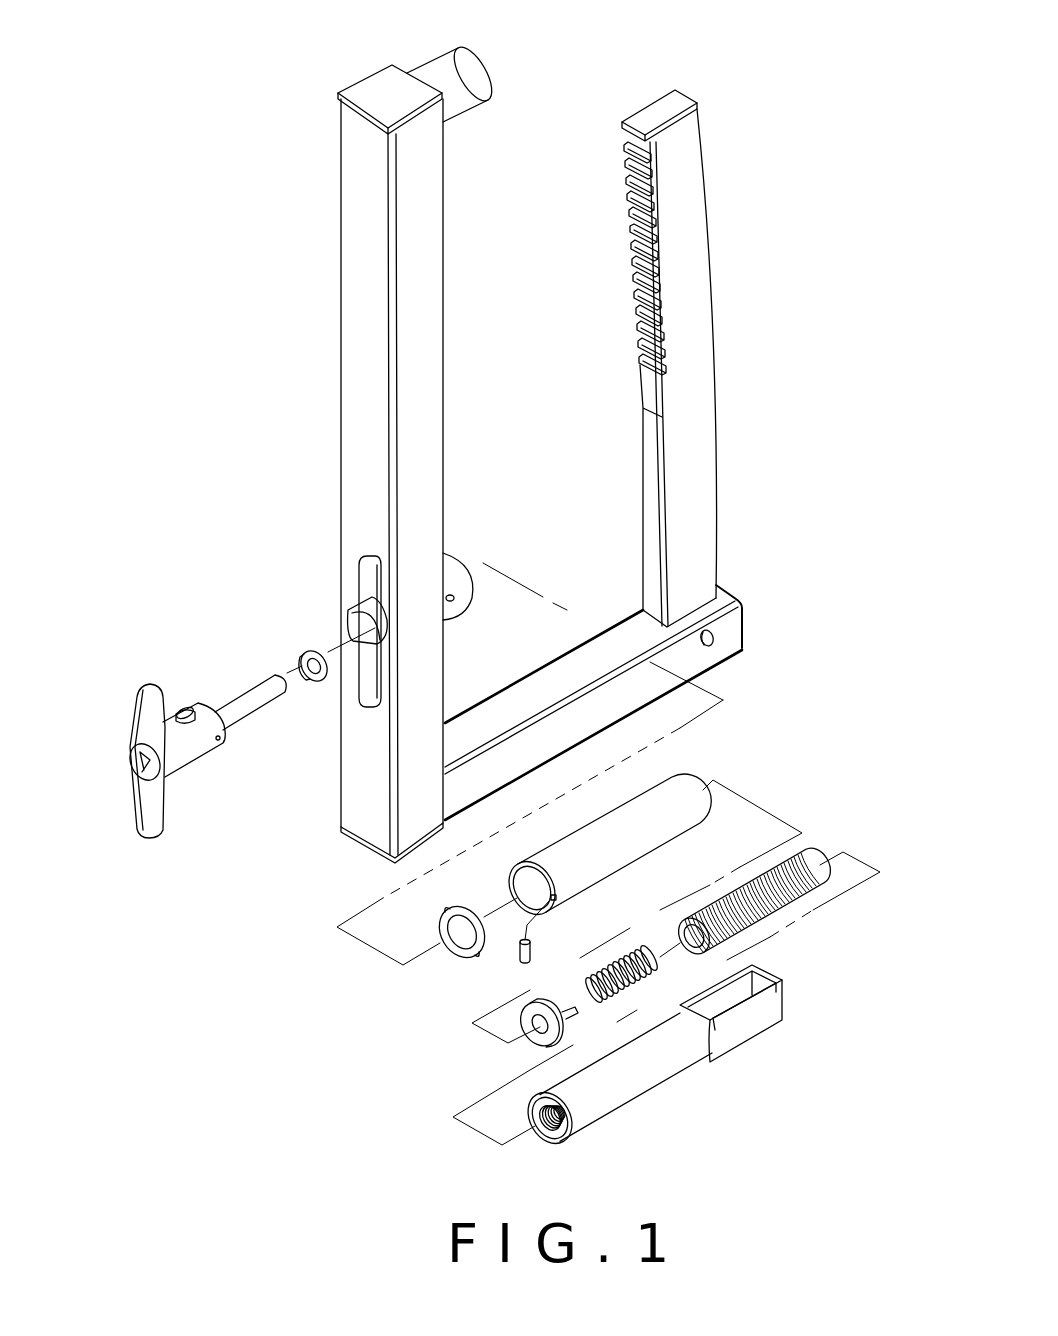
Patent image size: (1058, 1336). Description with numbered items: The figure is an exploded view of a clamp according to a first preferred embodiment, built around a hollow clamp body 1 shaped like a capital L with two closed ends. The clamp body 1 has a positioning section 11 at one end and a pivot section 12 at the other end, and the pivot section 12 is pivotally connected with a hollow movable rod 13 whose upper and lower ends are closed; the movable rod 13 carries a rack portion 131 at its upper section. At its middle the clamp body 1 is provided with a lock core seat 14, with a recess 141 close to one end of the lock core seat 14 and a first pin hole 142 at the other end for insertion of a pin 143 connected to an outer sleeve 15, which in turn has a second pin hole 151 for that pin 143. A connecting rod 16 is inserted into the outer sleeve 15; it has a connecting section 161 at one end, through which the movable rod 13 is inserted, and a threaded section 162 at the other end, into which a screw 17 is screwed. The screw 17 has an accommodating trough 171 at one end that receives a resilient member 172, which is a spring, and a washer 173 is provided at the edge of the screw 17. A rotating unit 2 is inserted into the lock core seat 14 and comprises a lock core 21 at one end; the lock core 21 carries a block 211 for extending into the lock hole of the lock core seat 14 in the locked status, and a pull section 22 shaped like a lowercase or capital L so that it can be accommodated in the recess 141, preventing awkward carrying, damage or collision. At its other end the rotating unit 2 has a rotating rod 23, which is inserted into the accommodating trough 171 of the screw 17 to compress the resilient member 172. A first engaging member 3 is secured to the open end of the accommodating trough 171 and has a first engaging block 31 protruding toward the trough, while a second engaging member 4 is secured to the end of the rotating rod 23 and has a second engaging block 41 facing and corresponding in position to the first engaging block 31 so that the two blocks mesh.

The clamp body 1 is at (362, 358).
The positioning section 11 is at (468, 73).
The pivot section 12 is at (730, 632).
The movable rod 13 is at (708, 452).
The rack portion 131 is at (627, 195).
The lock core seat 14 is at (362, 608).
The recess 141 is at (372, 680).
The first pin hole 142 is at (452, 592).
The pin 143 is at (512, 953).
The outer sleeve 15 is at (672, 793).
The second pin hole 151 is at (551, 897).
The connecting rod 16 is at (675, 1068).
The connecting section 161 is at (757, 1018).
The threaded section 162 is at (540, 1137).
The screw 17 is at (812, 853).
The accommodating trough 171 is at (720, 945).
The resilient member 172 is at (634, 957).
The washer 173 is at (438, 922).
The rotating unit 2 is at (193, 752).
The lock core 21 is at (135, 770).
The block 211 is at (181, 705).
The pull section 22 is at (143, 702).
The rotating rod 23 is at (267, 683).
The first engaging member 3 is at (532, 1010).
The first engaging block 31 is at (540, 1040).
The second engaging member 4 is at (303, 648).
The second engaging block 41 is at (307, 680).